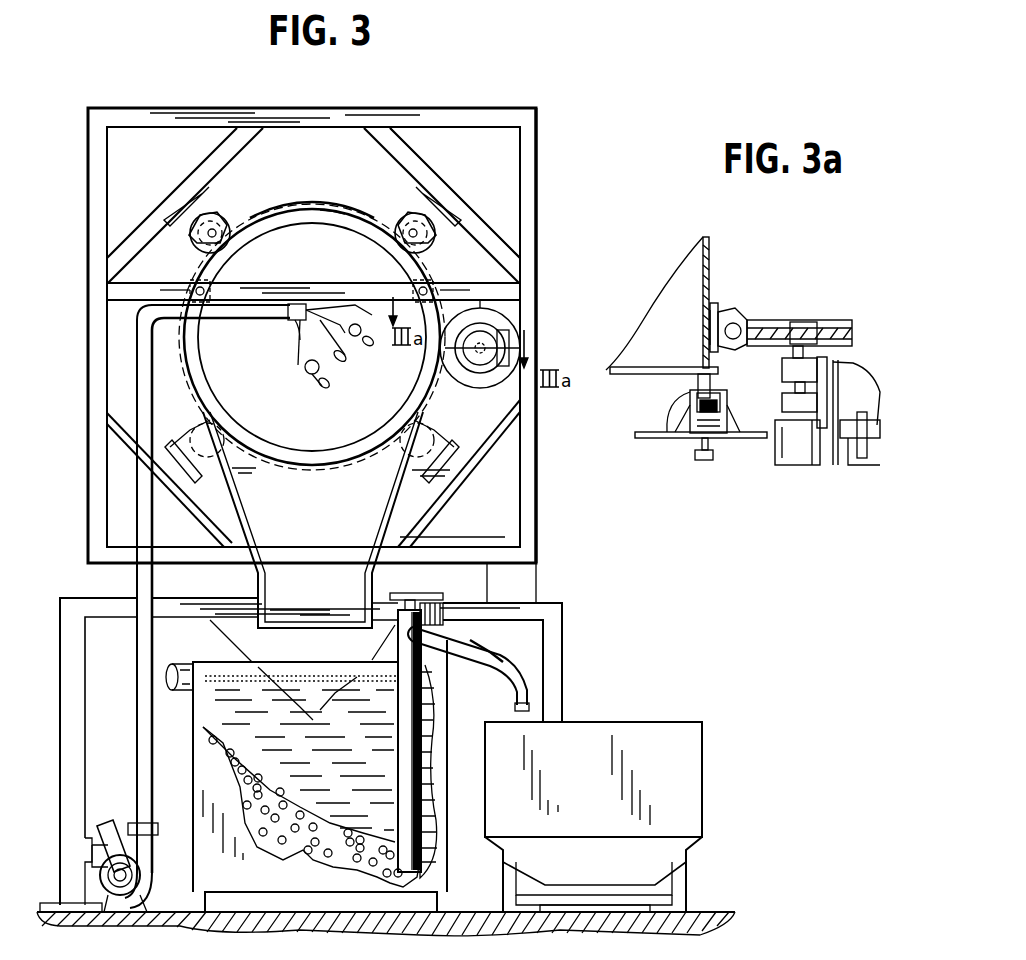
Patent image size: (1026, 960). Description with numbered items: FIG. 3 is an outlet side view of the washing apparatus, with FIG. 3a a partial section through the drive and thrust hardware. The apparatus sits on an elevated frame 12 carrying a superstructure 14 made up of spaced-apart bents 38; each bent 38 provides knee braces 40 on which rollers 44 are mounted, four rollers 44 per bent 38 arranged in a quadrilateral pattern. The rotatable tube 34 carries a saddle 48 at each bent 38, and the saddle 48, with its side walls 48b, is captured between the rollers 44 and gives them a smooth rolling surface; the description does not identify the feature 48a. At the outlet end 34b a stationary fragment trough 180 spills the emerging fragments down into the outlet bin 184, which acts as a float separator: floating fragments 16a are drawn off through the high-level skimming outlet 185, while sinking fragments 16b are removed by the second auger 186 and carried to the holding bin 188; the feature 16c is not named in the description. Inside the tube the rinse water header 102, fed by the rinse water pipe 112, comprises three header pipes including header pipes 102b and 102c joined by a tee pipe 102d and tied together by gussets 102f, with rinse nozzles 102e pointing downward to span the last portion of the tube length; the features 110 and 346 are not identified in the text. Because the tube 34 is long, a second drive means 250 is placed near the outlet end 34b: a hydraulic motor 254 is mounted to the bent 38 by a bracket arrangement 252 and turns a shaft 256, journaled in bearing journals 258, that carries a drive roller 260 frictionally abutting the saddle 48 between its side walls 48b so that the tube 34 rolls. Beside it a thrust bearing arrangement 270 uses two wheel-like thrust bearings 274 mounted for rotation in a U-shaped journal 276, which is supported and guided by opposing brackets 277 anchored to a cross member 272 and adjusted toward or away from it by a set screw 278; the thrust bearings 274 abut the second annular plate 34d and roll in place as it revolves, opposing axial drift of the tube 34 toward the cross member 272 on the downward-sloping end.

In FIG. 3, the frame 12 is at (58, 745).
In FIG. 3, the superstructure 14 is at (538, 542).
In FIG. 3, the floating fragments 16a is at (222, 668).
In FIG. 3, the sinking fragments 16b is at (297, 840).
In FIG. 3, the sediment deposit on wall 16c is at (370, 813).
In FIG. 3, the rotatable tube 34 is at (304, 206).
In FIG. 3a, the rotatable tube 34 is at (710, 250).
In FIG. 3, the outlet end of the tube 34b is at (367, 227).
In FIG. 3a, the second annular plate 34d is at (703, 370).
In FIG. 3, the drum rim 346 is at (340, 216).
In FIG. 3, the bent 38 is at (537, 482).
In FIG. 3a, the bent 38 is at (848, 447).
In FIG. 3, the knee braces 40 is at (413, 157).
In FIG. 3, the rollers 44 is at (225, 188).
In FIG. 3a, the saddle 48 is at (727, 302).
In FIG. 3a, the bracket leg 48a is at (723, 296).
In FIG. 3a, the side walls of the saddle 48b is at (750, 317).
In FIG. 3, the rinse water header 102 is at (336, 320).
In FIG. 3, the header pipe 102b is at (300, 367).
In FIG. 3, the header pipe 102c is at (380, 340).
In FIG. 3, the tee pipe 102d is at (335, 360).
In FIG. 3, the rinse nozzles 102e is at (318, 382).
In FIG. 3, the gussets 102f is at (300, 333).
In FIG. 3, the pump 110 is at (128, 892).
In FIG. 3, the rinse water pipe 112 is at (137, 579).
In FIG. 3, the fragment trough 180 is at (382, 572).
In FIG. 3, the outlet bin 184 is at (447, 717).
In FIG. 3, the skimming outlet 185 is at (182, 693).
In FIG. 3, the second auger 186 is at (527, 663).
In FIG. 3, the holding bin 188 is at (638, 722).
In FIG. 3, the second drive means 250 is at (528, 322).
In FIG. 3a, the bracket arrangement 252 is at (870, 368).
In FIG. 3a, the hydraulic motor 254 is at (807, 462).
In FIG. 3a, the shaft 256 is at (803, 320).
In FIG. 3a, the bearing journals 258 is at (782, 370).
In FIG. 3a, the drive roller 260 is at (748, 318).
In FIG. 3, the thrust bearing arrangement 270 is at (190, 273).
In FIG. 3a, the thrust bearing arrangement 270 is at (655, 423).
In FIG. 3, the cross member 272 is at (452, 283).
In FIG. 3a, the cross member 272 is at (650, 440).
In FIG. 3a, the thrust bearings 274 is at (693, 385).
In FIG. 3a, the U-shaped journal 276 is at (690, 400).
In FIG. 3a, the opposing brackets 277 is at (723, 418).
In FIG. 3a, the set screw 278 is at (712, 447).